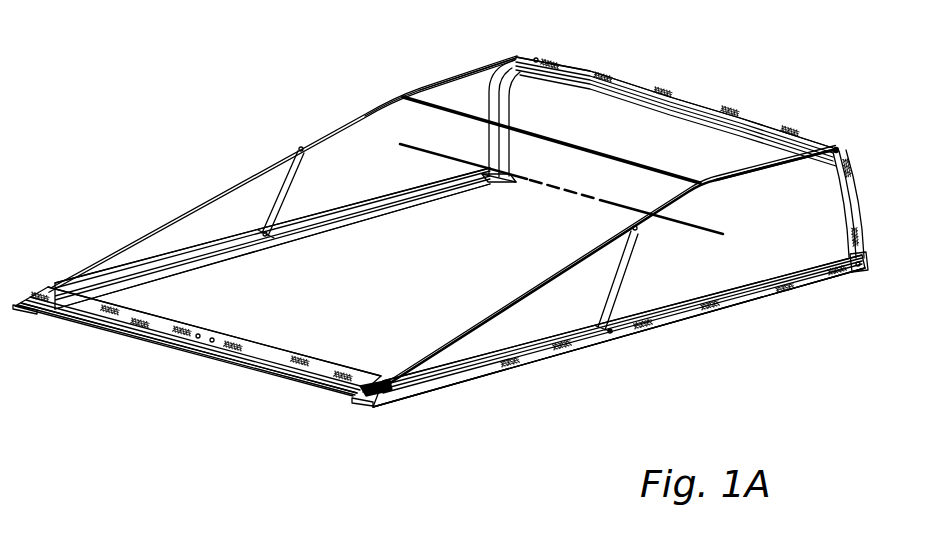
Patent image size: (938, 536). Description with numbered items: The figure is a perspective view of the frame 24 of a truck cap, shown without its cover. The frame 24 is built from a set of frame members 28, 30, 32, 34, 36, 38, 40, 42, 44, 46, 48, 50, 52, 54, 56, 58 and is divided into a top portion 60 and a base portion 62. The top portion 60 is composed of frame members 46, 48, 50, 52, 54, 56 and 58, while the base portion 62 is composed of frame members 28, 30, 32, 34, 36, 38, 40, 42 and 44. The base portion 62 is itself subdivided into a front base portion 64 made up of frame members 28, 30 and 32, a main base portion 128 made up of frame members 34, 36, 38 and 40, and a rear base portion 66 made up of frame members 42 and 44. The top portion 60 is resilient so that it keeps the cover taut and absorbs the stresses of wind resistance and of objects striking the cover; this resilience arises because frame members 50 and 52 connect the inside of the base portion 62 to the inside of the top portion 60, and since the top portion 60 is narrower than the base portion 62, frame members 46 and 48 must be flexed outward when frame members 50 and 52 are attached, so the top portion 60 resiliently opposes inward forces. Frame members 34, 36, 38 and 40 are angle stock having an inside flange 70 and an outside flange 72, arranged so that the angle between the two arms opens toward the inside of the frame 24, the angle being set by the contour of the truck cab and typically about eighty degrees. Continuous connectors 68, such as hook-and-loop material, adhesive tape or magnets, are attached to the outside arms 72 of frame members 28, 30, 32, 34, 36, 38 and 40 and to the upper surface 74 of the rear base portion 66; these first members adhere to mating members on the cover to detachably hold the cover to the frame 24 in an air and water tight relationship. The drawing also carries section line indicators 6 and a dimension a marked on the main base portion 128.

The section line 6- 6 is at (400, 144).
The frame 24 is at (318, 249).
The frame member 28 is at (613, 90).
The frame member 30 is at (507, 105).
The frame member 32 is at (838, 186).
The frame member 34 is at (433, 197).
The frame member 36 is at (773, 273).
The frame member 38 is at (197, 260).
The frame member 40 is at (533, 340).
The frame member 42 is at (97, 325).
The frame member 44 is at (257, 367).
The frame member 46 is at (215, 198).
The frame member 48 is at (492, 313).
The frame member 50 is at (283, 197).
The frame member 52 is at (620, 273).
The frame member 54 is at (440, 86).
The frame member 56 is at (750, 170).
The frame member 58 is at (627, 150).
The top portion 60 is at (357, 92).
The base portion 62 is at (620, 355).
The front base portion 64 is at (760, 92).
The rear base portion 66 is at (301, 396).
The continuous connector 68 is at (343, 210).
The inside flange 70 is at (370, 213).
The outside flange 72 is at (398, 193).
The upper surface 74 is at (276, 358).
The main base portion 128 is at (840, 290).
The flange thickness dimension a is at (733, 270).